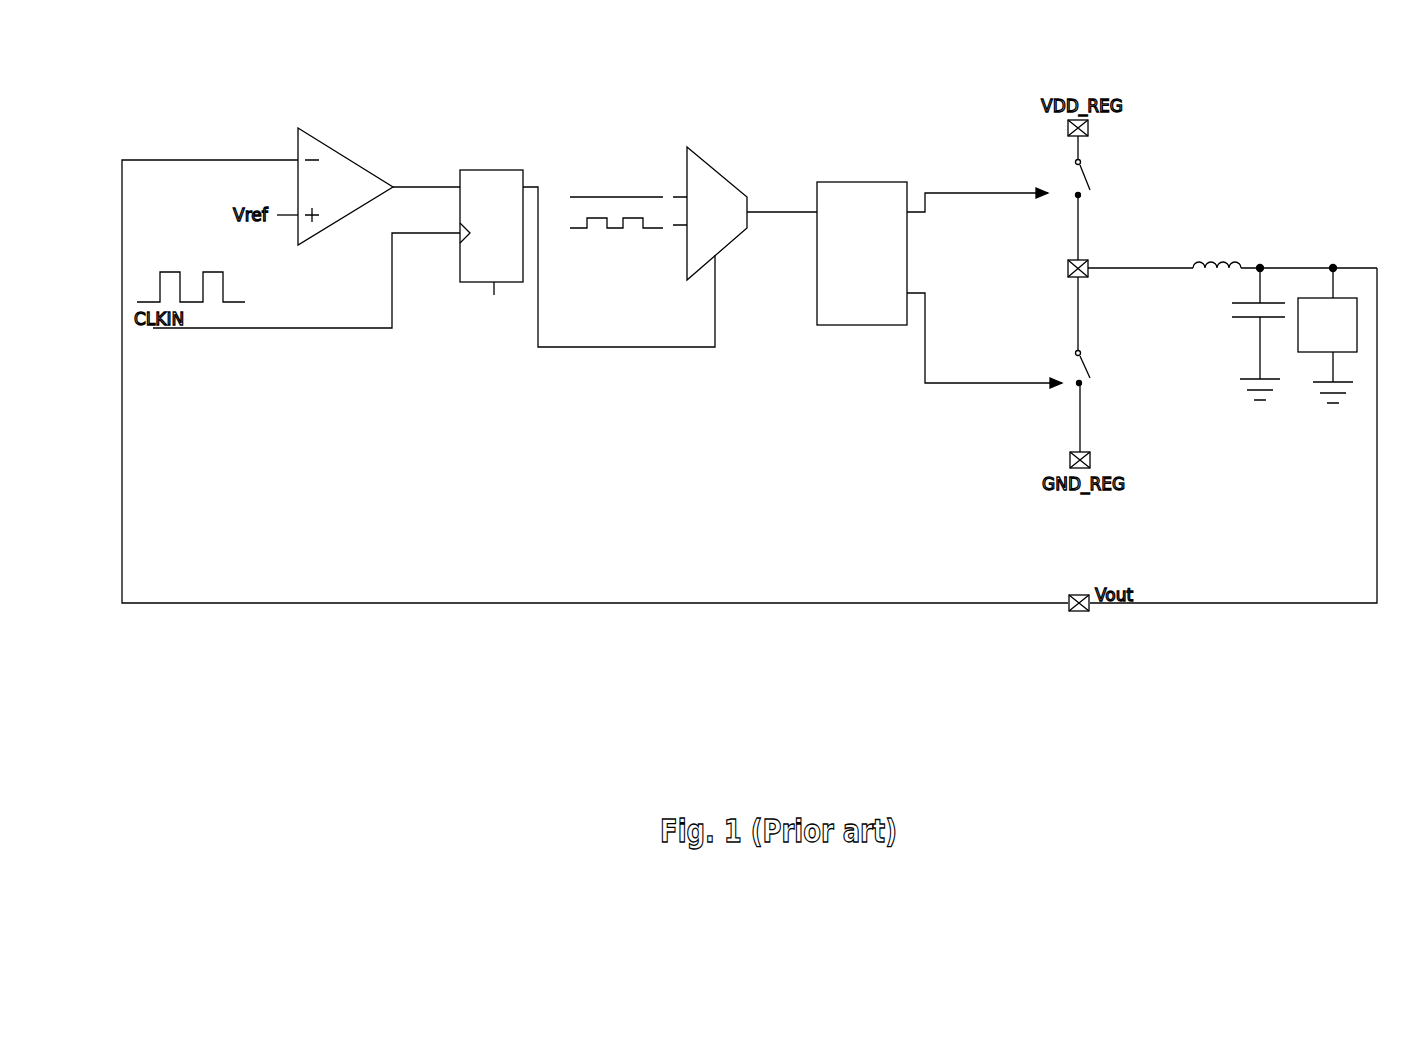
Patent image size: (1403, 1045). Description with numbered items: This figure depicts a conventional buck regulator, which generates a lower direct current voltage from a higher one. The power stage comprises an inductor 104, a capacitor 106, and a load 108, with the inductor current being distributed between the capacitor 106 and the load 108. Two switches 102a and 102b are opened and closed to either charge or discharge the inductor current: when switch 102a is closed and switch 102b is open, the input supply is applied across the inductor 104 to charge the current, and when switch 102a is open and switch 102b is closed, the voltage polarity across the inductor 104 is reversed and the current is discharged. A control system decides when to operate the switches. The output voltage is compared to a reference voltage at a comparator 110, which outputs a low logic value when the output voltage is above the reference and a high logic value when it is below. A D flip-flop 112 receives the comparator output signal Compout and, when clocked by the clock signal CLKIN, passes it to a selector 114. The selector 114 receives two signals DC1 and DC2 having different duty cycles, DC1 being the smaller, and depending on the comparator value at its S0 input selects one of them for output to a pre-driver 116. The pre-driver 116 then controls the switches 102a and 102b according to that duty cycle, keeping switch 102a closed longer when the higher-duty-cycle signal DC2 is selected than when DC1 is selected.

The comparator 110 is at (316, 128).
The flip-flop 112 is at (497, 170).
The selector 114 is at (691, 150).
The pre-driver 116 is at (871, 182).
The switch 102a is at (1142, 208).
The switch 102b is at (1142, 396).
The inductor 104 is at (1237, 246).
The capacitor 106 is at (1220, 324).
The load 108 is at (1346, 336).